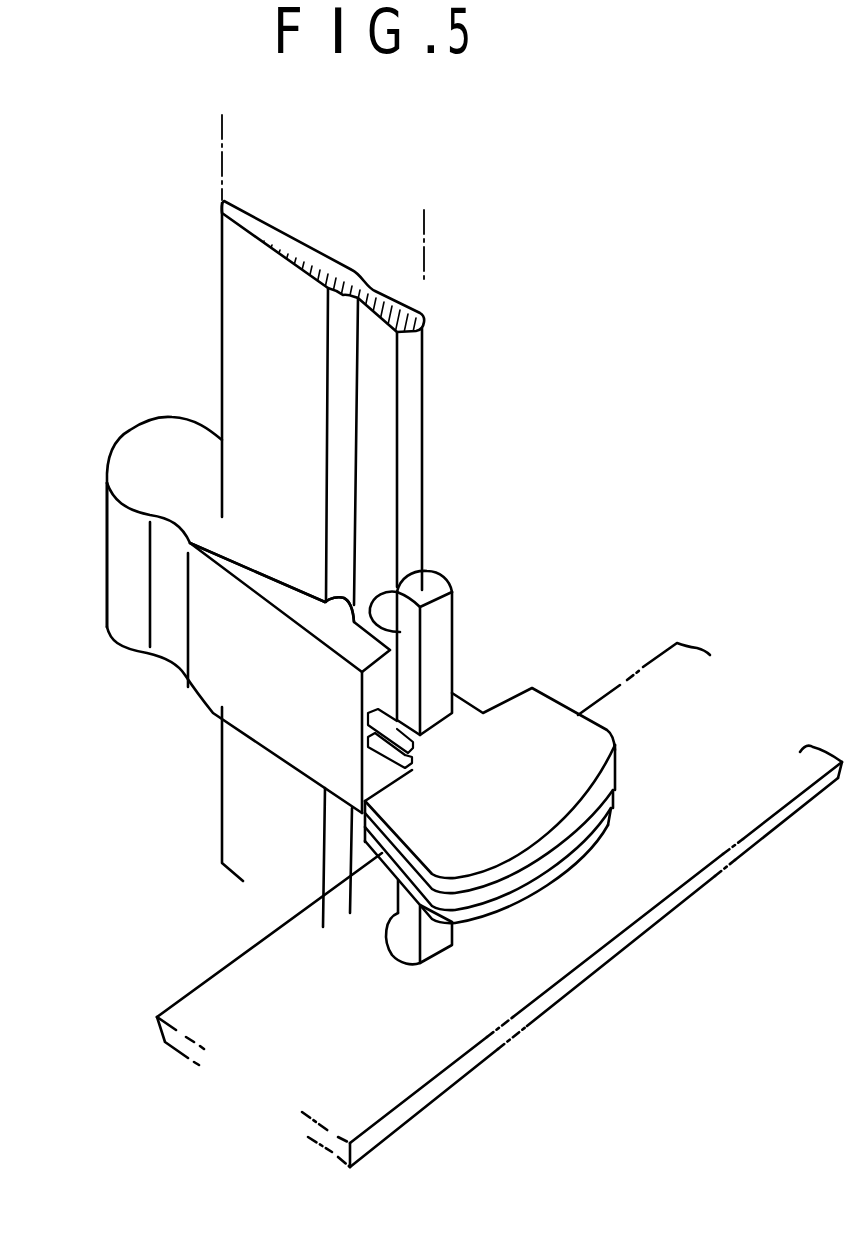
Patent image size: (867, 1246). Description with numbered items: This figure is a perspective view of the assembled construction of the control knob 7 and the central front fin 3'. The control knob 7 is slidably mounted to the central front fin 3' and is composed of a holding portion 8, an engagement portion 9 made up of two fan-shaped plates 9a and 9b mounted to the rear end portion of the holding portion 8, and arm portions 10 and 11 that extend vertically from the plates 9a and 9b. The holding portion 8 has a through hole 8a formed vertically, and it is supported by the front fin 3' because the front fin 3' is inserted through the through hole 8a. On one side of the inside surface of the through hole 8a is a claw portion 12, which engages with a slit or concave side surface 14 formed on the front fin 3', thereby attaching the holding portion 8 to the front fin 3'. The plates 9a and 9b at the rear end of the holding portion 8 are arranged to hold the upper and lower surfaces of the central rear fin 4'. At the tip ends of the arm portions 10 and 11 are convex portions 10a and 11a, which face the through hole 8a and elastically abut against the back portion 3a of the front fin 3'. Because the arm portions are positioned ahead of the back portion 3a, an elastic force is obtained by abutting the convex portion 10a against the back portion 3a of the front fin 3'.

The central front fin 3' is at (274, 498).
The slit or concave side surface 14 is at (337, 325).
The back portion of the front fin 3a is at (413, 404).
The holding portion 8 is at (107, 527).
The control knob 7 is at (88, 632).
The through hole 8a is at (302, 567).
The claw portion 12 is at (337, 597).
The arm portion 10 is at (453, 610).
The convex portion 10a is at (400, 632).
The engagement portion 9 is at (537, 712).
The plate (fan-shaped portion) 9a is at (582, 762).
The plate (fan-shaped portion) 9b is at (587, 830).
The arm portion 11 is at (437, 942).
The convex portion 11a is at (383, 933).
The central rear fin 4' is at (499, 905).